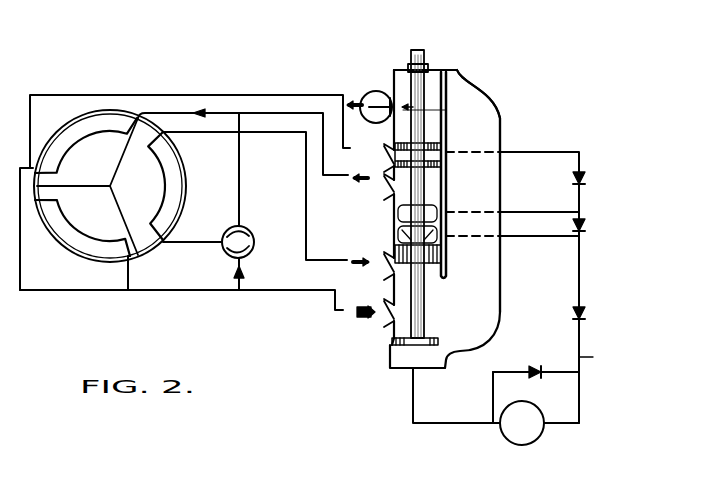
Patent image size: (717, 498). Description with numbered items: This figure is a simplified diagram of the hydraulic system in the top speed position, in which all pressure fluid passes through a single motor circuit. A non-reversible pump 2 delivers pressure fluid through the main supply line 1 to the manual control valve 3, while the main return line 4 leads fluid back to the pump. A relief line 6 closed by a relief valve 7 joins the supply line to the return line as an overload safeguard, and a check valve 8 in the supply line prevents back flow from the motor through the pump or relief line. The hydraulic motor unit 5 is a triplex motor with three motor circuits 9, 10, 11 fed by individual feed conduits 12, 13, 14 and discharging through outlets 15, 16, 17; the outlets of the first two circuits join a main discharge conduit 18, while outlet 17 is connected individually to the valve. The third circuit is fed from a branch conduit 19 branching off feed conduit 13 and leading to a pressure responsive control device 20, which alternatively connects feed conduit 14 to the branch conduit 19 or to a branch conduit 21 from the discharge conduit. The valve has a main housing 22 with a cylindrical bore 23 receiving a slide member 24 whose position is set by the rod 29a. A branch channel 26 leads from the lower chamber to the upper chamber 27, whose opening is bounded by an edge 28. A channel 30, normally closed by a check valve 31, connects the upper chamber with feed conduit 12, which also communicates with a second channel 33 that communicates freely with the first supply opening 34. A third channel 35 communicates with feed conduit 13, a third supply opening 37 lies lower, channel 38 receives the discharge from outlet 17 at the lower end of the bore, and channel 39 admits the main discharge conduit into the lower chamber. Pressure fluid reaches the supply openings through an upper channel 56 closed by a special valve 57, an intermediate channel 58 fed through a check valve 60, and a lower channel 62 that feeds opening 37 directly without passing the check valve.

The main supply line 1 is at (594, 356).
The non-reversible pump 2 is at (527, 438).
The manual control valve 3 is at (386, 329).
The main return line 4 is at (413, 400).
The hydraulic motor unit 5 is at (85, 126).
The relief line 6 is at (493, 395).
The relief valve 7 is at (533, 362).
The check valve 8 is at (585, 313).
The motor circuit 9 is at (82, 227).
The motor circuit 10 is at (86, 145).
The motor circuit 11 is at (142, 186).
The feed conduit 12 is at (181, 93).
The feed conduit 13 is at (258, 114).
The feed conduit 14 is at (173, 243).
The outlet 15 is at (127, 275).
The outlet 16 is at (21, 258).
The outlet 17 is at (303, 208).
The main discharge conduit 18 is at (197, 306).
The branch conduit 19 is at (240, 157).
The pressure responsive control device 20 is at (251, 246).
The branch conduit 21 is at (235, 262).
The main housing 22 is at (503, 296).
The cylindrical bore 23 is at (453, 266).
The slide member 24 is at (388, 343).
The branch channel 26 is at (485, 128).
The upper chamber 27 is at (458, 82).
The edge 28 is at (447, 113).
The rod 29a is at (416, 64).
The channel 30 is at (372, 92).
The check valve 31 is at (410, 69).
The second channel 33 is at (385, 152).
The first supply channel opening 34 is at (499, 116).
The third channel 35 is at (382, 187).
The third supply opening 37 is at (394, 236).
The channel 38 is at (382, 276).
The channel 39 is at (372, 320).
The upper channel 56 is at (543, 152).
The special valve 57 is at (584, 180).
The intermediate channel 58 is at (528, 212).
The check valve 60 is at (585, 226).
The lower channel 62 is at (536, 237).